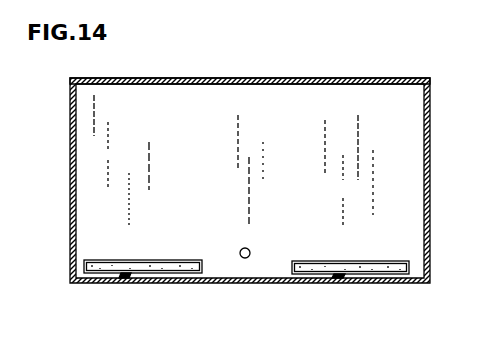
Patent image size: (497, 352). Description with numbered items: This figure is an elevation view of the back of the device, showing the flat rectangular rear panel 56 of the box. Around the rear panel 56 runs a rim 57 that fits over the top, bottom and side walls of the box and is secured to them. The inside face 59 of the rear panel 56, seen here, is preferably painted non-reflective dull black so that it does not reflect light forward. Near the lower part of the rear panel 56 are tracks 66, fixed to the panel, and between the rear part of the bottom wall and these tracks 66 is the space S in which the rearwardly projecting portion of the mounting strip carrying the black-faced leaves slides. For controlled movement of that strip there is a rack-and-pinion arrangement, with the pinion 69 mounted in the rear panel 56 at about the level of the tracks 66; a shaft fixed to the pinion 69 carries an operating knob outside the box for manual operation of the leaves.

The rear panel 56 is at (419, 134).
The rim 57 is at (211, 79).
The inside face 59 is at (320, 167).
The track 66 is at (156, 274).
The space S is at (124, 277).
The pinion 69 is at (245, 258).